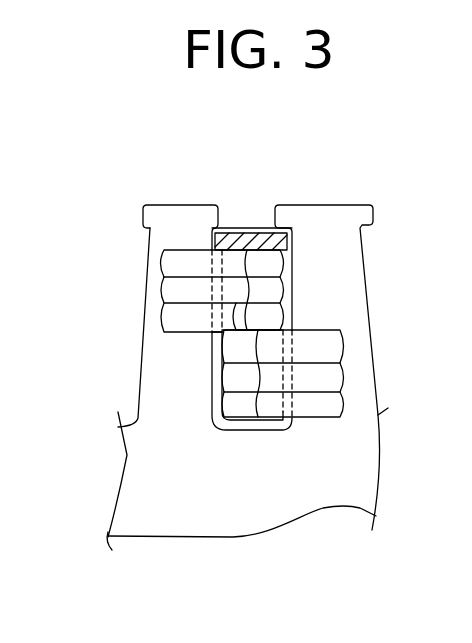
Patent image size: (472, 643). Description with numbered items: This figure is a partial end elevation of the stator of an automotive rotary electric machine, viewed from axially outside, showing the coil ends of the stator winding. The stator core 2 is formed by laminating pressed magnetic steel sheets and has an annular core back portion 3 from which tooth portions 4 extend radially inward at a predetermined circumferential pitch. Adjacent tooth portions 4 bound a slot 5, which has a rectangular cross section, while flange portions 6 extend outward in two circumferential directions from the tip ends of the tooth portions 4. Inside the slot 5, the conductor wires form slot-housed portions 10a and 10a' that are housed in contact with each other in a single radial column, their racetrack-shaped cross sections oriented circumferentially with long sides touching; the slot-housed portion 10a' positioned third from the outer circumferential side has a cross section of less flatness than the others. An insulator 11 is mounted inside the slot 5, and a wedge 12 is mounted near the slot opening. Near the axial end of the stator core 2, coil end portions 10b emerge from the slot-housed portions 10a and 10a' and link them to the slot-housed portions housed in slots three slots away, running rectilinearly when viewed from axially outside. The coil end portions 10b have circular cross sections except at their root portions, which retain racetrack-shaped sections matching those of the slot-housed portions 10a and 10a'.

The stator core 2 is at (241, 372).
The core back portion 3 is at (160, 520).
The tooth portion 4 is at (342, 300).
The slot 5 is at (215, 372).
The flange portion 6 is at (208, 218).
The slot-housed portion 10a is at (333, 289).
The slot-housed portion 10a' is at (170, 311).
The coil end portion 10b is at (177, 262).
The insulator 11 is at (217, 352).
The wedge 12 is at (249, 232).